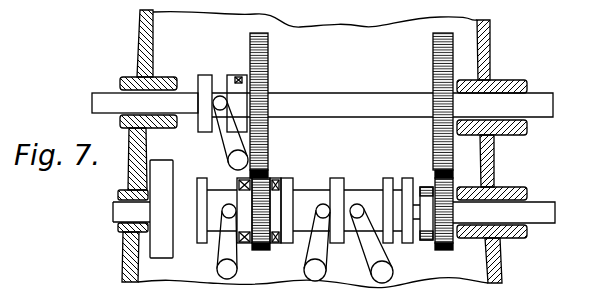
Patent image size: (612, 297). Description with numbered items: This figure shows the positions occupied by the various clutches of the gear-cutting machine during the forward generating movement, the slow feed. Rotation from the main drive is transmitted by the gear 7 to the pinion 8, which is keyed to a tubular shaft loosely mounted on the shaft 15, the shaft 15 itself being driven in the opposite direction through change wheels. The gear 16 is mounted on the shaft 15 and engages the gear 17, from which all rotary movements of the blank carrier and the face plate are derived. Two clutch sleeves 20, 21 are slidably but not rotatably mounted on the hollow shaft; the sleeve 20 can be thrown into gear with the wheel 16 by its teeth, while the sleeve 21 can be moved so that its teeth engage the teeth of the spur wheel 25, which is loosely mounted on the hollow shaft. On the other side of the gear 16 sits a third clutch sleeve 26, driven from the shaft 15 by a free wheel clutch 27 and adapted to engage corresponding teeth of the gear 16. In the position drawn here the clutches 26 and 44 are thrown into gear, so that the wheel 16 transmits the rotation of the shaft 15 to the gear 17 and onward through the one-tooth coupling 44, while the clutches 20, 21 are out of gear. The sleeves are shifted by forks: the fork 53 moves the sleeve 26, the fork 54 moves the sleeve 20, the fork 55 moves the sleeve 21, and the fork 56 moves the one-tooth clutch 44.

The gear 7 is at (441, 47).
The pinion 8 is at (447, 251).
The shaft 15 is at (553, 220).
The gear 16 is at (262, 252).
The gear 17 is at (262, 80).
The clutch sleeve 20 is at (322, 190).
The clutch sleeve 21 is at (360, 190).
The spur wheel 25 is at (430, 242).
The clutch sleeve 26 is at (222, 190).
The free wheel clutch 27 is at (168, 155).
The one-tooth coupling 44 is at (203, 77).
The fork 53 is at (226, 246).
The fork 54 is at (318, 242).
The fork 55 is at (368, 243).
The fork 56 is at (228, 130).